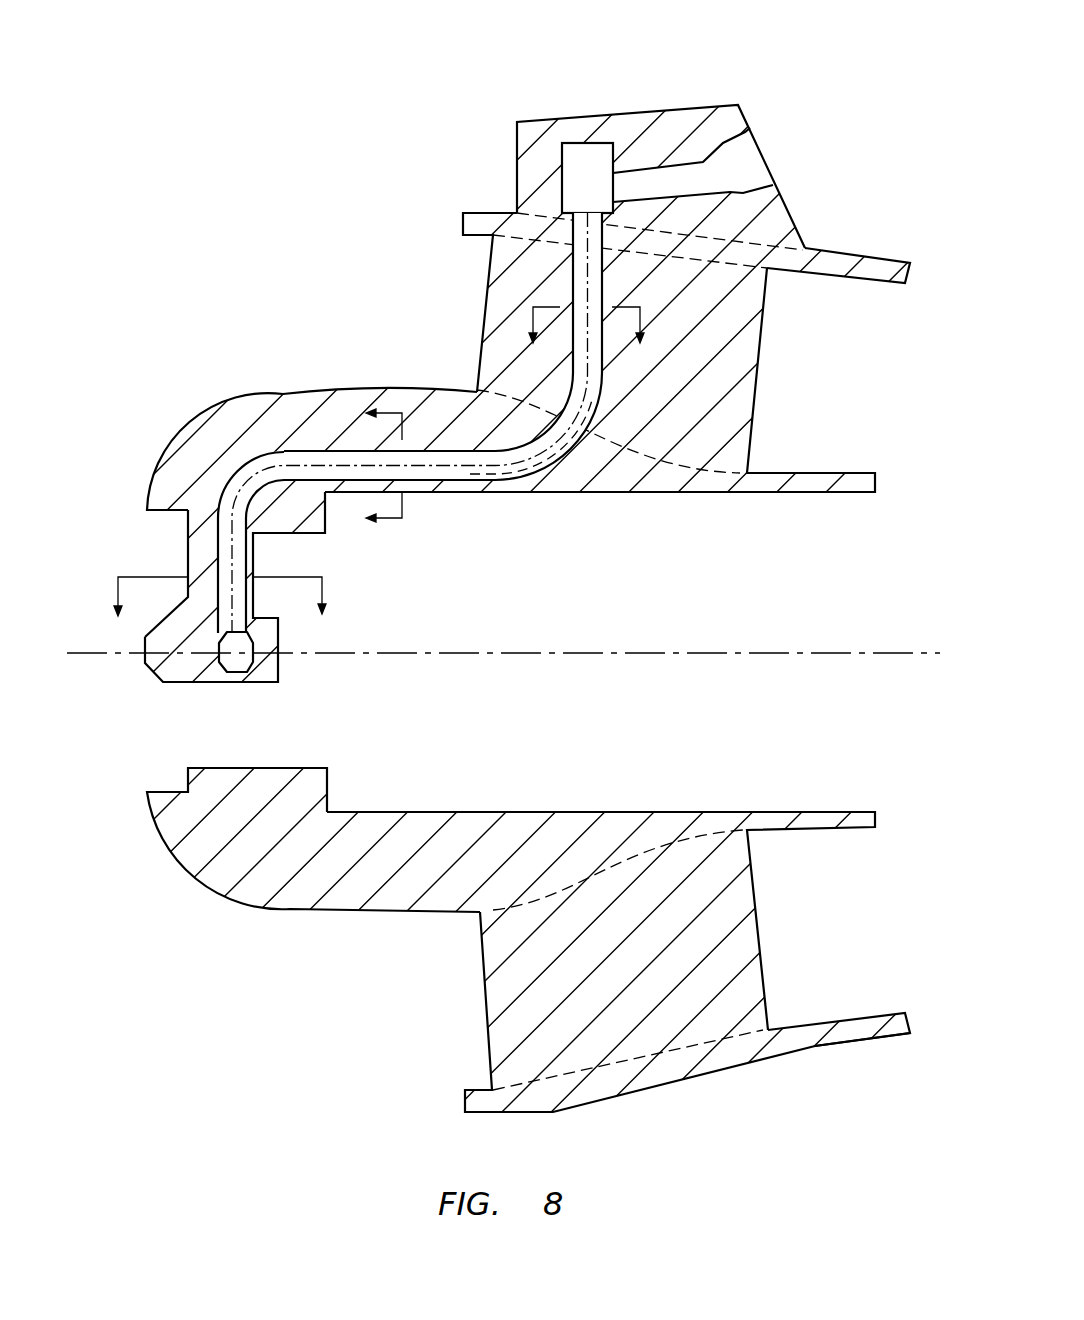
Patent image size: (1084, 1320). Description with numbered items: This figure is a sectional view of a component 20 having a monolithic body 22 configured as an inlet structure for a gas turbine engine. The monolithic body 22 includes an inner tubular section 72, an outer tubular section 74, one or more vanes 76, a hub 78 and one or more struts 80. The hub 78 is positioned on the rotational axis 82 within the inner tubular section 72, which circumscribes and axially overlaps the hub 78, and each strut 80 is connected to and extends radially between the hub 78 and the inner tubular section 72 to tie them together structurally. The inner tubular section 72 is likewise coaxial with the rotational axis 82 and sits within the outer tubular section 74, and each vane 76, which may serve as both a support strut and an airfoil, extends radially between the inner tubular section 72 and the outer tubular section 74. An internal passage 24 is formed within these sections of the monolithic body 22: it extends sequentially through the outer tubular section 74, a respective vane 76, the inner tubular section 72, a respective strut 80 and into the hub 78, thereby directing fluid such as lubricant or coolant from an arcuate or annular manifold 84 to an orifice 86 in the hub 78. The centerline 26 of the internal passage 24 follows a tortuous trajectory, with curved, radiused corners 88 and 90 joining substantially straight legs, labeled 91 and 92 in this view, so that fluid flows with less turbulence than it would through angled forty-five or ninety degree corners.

The temperature sensor assembly 20 is at (542, 660).
The monolithic body 22 is at (704, 104).
The internal passage 24 is at (474, 483).
The centerline 26 is at (537, 455).
The inner tubular section 72 is at (342, 388).
The outer tubular section 74 is at (862, 250).
The vane 76 is at (760, 345).
The hub 78 is at (158, 672).
The strut 80 is at (185, 533).
The rotational axis 82 is at (892, 655).
The manifold 84 is at (598, 165).
The orifice 86 is at (245, 682).
The curved corner 88 is at (566, 468).
The curved corner 90 is at (558, 277).
The horizontal portion 91 is at (432, 441).
The substantially straight leg 92 is at (206, 552).